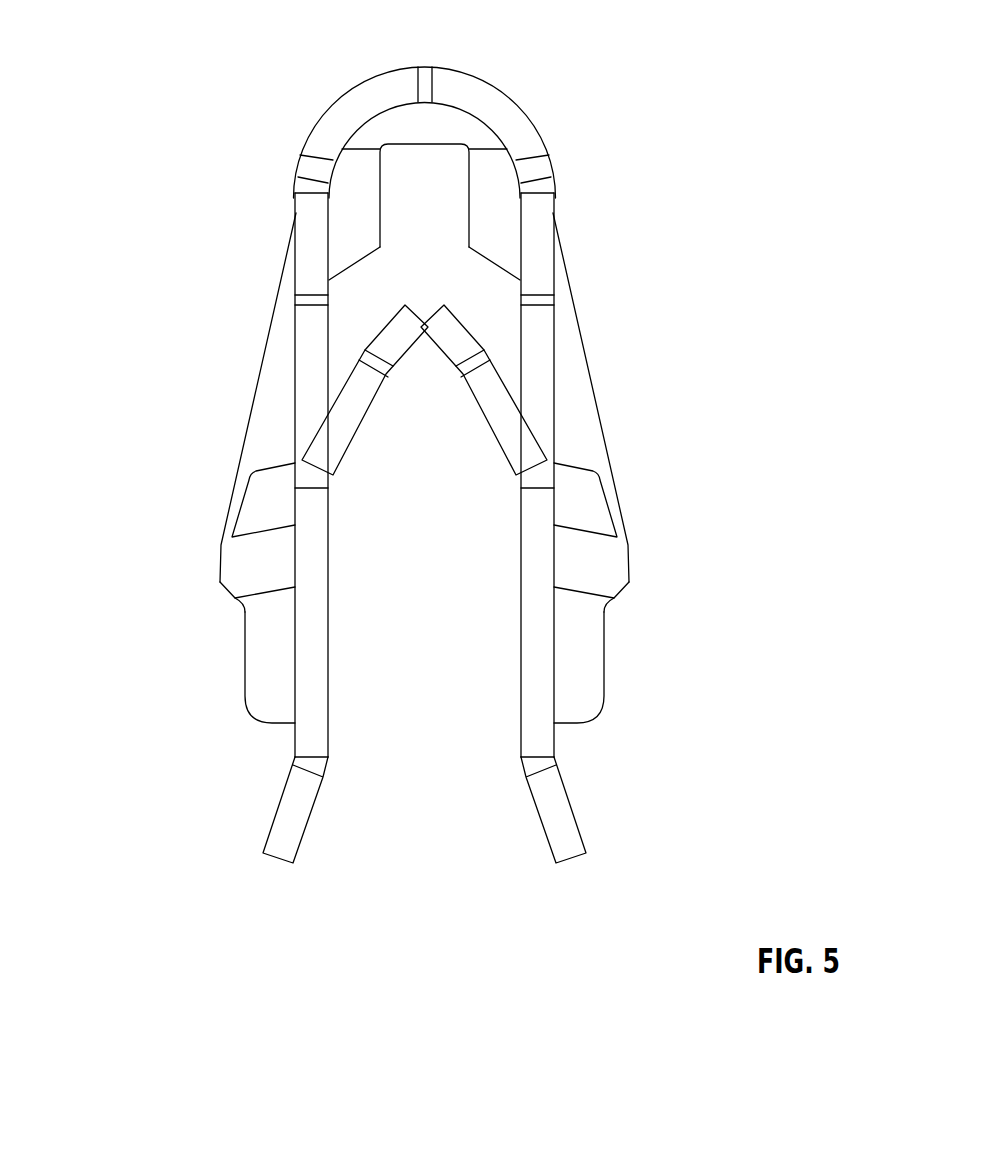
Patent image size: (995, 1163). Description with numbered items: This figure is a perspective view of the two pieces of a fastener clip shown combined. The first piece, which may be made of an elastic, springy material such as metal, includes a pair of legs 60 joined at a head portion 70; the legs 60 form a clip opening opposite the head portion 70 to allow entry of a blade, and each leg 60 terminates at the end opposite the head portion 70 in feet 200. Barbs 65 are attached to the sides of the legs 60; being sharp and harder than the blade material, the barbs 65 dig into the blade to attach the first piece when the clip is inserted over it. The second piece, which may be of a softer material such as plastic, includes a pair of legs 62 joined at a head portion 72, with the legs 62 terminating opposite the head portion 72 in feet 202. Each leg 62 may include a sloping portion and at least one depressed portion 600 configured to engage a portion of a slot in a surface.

The head portion 70 is at (458, 92).
The head portion 72 is at (448, 130).
The barbs 65 is at (390, 338).
The legs 62 is at (267, 437).
The legs 60 is at (312, 565).
The depressed portion 600 is at (237, 602).
The feet 202 is at (253, 690).
The feet 200 is at (290, 807).